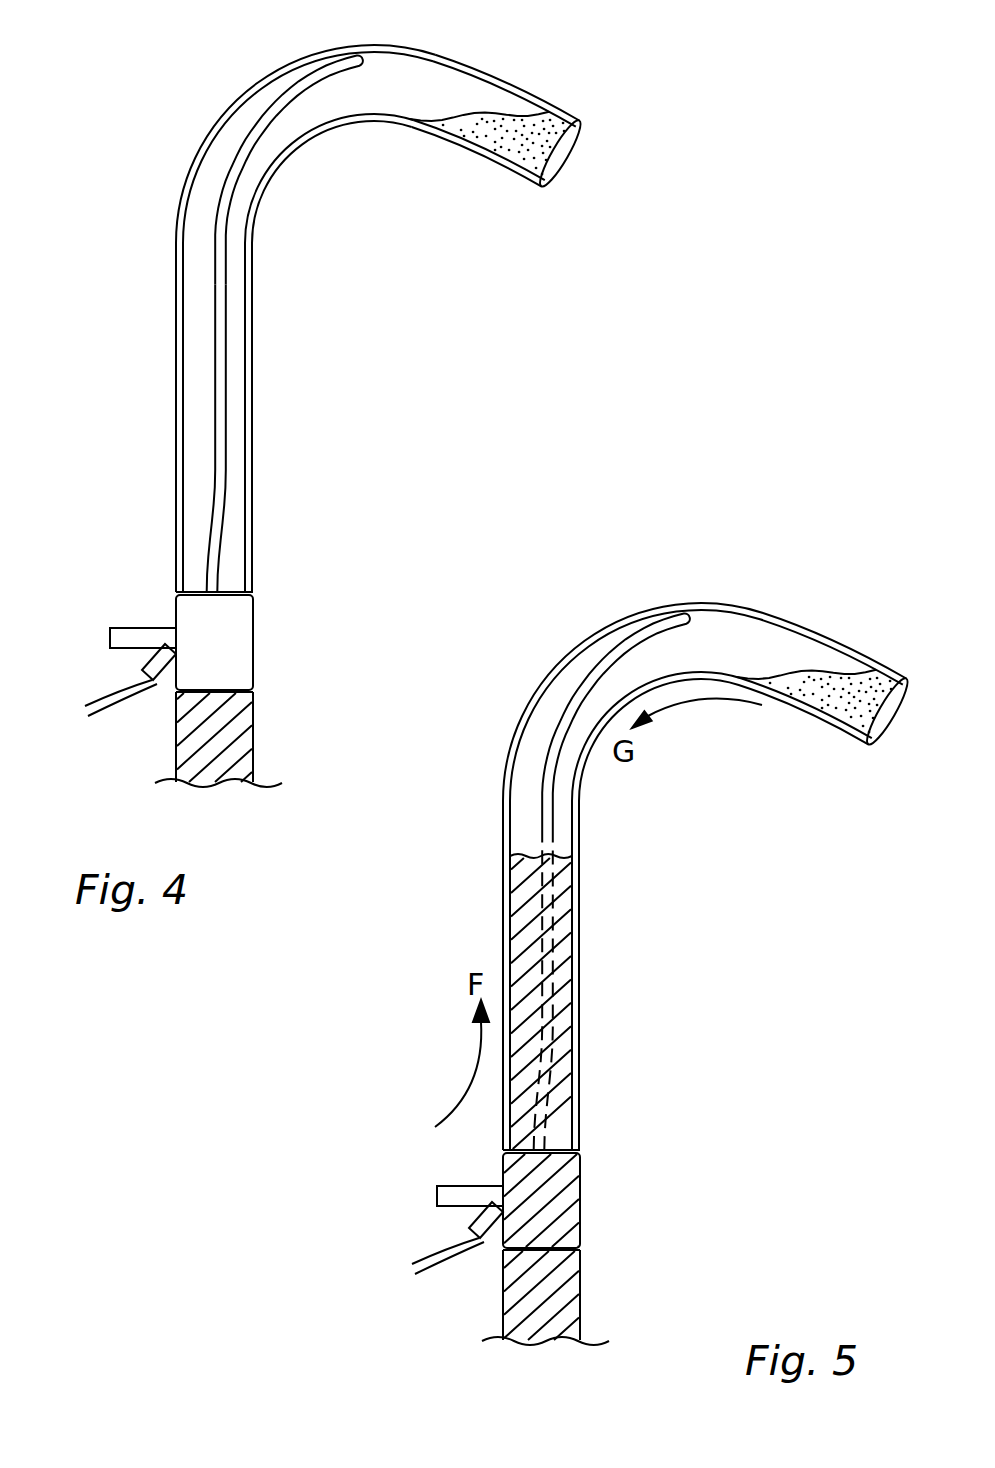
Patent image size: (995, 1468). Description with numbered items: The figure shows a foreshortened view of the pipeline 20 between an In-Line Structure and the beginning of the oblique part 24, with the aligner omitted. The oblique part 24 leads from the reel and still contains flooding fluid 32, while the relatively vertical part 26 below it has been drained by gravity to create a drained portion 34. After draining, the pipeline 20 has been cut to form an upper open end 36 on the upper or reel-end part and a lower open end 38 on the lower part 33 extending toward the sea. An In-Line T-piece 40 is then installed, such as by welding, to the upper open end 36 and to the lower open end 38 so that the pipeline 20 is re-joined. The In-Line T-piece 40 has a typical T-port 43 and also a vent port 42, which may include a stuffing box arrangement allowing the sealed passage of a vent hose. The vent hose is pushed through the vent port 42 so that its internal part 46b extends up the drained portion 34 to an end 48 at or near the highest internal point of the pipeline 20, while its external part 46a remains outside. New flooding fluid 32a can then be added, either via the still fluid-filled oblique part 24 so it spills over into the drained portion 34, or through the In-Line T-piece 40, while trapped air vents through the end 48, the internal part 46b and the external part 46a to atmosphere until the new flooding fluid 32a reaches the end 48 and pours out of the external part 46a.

In FIG. 4, the pipeline 20 is at (167, 164).
In FIG. 4, the oblique part 24 is at (525, 90).
In FIG. 4, the vertical part 26 is at (253, 385).
In FIG. 4, the flooding fluid 32 is at (522, 150).
In FIG. 5, the flooding fluid 32 is at (848, 706).
In FIG. 5, the new flooding fluid 32a is at (523, 950).
In FIG. 4, the lower part 33 is at (253, 725).
In FIG. 4, the drained portion 34 is at (198, 347).
In FIG. 4, the upper open end 36 is at (253, 592).
In FIG. 4, the lower open end 38 is at (253, 690).
In FIG. 4, the In-Line T-piece 40 is at (253, 620).
In FIG. 5, the In-Line T-piece 40 is at (580, 1193).
In FIG. 4, the vent port 42 is at (148, 660).
In FIG. 5, the vent port 42 is at (475, 1226).
In FIG. 4, the T-port 43 is at (135, 628).
In FIG. 4, the external part of the vent hose 46a is at (152, 690).
In FIG. 5, the external part of the vent hose 46a is at (479, 1250).
In FIG. 4, the internal part of the vent hose 46b is at (220, 320).
In FIG. 5, the internal part of the vent hose 46b is at (543, 878).
In FIG. 4, the vent hose end 48 is at (372, 67).